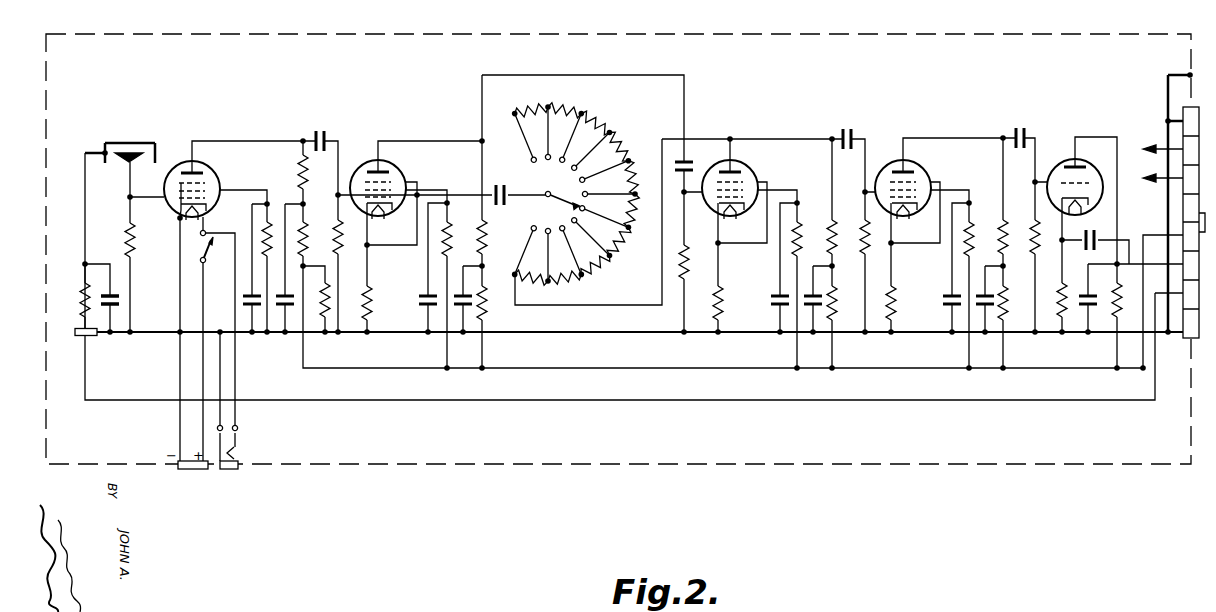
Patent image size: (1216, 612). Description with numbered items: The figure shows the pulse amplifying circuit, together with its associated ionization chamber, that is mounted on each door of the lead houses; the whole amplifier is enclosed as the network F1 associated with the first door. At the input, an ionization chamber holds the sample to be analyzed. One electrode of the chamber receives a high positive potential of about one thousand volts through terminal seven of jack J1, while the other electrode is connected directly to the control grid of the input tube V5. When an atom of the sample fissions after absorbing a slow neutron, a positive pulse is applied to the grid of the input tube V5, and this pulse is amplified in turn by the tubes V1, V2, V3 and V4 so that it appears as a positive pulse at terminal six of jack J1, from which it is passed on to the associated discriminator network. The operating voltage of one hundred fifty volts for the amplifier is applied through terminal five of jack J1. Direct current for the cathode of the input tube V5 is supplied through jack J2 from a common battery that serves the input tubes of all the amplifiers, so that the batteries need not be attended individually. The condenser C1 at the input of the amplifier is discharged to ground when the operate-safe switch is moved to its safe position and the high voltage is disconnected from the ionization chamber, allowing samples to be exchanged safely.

The network F1 is at (256, 94).
The input tube V5 is at (191, 179).
The tube V1 is at (378, 177).
The tube V2 is at (736, 181).
The tube V3 is at (910, 182).
The tube V4 is at (1075, 176).
The condenser C1 is at (122, 303).
The jack J1 is at (1183, 207).
The jack J2 is at (237, 399).